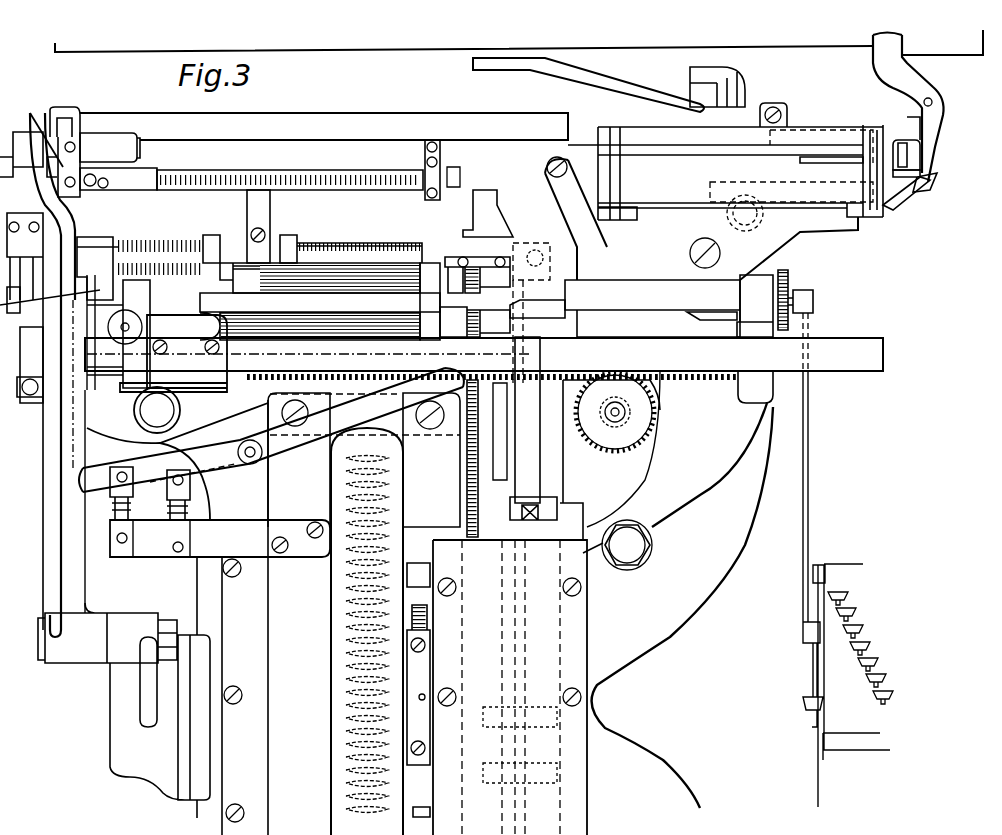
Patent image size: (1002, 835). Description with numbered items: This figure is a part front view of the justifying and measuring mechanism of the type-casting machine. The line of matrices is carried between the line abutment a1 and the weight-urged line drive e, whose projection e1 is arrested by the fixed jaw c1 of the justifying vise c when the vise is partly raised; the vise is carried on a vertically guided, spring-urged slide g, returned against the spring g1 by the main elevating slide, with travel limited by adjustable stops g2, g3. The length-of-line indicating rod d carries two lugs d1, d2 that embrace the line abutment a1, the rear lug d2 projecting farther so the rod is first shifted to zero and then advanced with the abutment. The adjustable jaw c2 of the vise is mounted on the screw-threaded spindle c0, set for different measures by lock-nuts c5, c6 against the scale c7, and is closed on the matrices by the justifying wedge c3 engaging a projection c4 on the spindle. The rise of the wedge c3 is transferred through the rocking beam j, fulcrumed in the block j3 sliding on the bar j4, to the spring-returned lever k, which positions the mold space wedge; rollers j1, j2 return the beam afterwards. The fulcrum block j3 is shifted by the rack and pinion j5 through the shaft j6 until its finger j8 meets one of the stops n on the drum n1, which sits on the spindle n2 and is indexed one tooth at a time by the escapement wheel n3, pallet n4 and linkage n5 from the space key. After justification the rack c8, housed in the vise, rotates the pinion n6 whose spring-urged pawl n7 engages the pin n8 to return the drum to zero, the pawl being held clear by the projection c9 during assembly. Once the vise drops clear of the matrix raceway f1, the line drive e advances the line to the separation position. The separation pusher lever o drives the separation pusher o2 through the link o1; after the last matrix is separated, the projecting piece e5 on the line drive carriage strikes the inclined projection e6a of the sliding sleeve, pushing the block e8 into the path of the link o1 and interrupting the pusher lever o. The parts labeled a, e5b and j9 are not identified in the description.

The line drive e is at (935, 118).
The pivot screw e5b is at (931, 100).
The carriage rail bar a is at (755, 152).
The line abutment a1 is at (830, 155).
The lug d1 is at (800, 150).
The length-of-line indicating rod d is at (823, 200).
The rear lug d2 is at (888, 150).
The projection e1 is at (906, 201).
The matrix raceway f1 is at (258, 150).
The projecting piece e5 is at (78, 100).
The block e8 is at (50, 120).
The inclined projection e6a is at (105, 135).
The scale c7 is at (300, 180).
The link o1 is at (21, 154).
The separation pusher o2 is at (12, 175).
The separation pusher lever o is at (35, 205).
The roller j1 is at (80, 228).
The finger j8 is at (128, 240).
The drum n1 is at (160, 262).
The lock-nut c5 is at (212, 235).
The adjustable jaw c2 is at (265, 220).
The lock-nut c6 is at (290, 235).
The vise spindle c0 is at (330, 262).
The stops n is at (355, 263).
The justifying vise c is at (430, 255).
The pawl n7 is at (440, 255).
The projection c9 is at (460, 256).
The fixed jaw c1 is at (490, 215).
The projection c4 is at (528, 248).
The spindle n2 is at (600, 258).
The pinion n6 is at (500, 303).
The pin n8 is at (475, 322).
The pallet n4 is at (775, 300).
The escapement wheel n3 is at (790, 320).
The linkage n5 is at (808, 505).
The justifying wedge c3 is at (560, 338).
The rack and pinion j5 is at (660, 418).
The shaft j6 is at (610, 422).
The pin j9 is at (622, 422).
The rack c8 is at (480, 483).
The roller j2 is at (478, 400).
The fulcrum block j3 is at (140, 310).
The rocking beam j is at (233, 305).
The stop lever k is at (20, 345).
The bar j4 is at (280, 378).
The spring g1 is at (390, 512).
The adjustable stop g2 is at (430, 625).
The adjustable stop g3 is at (430, 812).
The slide g is at (278, 720).